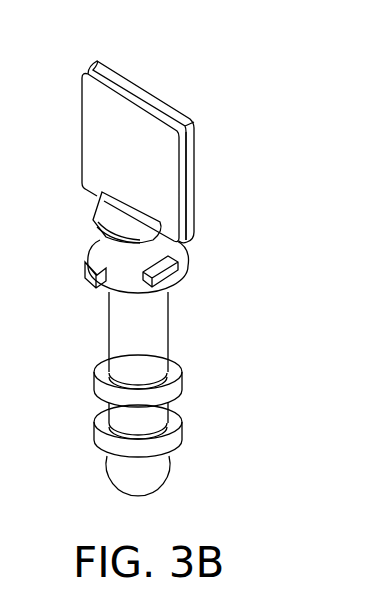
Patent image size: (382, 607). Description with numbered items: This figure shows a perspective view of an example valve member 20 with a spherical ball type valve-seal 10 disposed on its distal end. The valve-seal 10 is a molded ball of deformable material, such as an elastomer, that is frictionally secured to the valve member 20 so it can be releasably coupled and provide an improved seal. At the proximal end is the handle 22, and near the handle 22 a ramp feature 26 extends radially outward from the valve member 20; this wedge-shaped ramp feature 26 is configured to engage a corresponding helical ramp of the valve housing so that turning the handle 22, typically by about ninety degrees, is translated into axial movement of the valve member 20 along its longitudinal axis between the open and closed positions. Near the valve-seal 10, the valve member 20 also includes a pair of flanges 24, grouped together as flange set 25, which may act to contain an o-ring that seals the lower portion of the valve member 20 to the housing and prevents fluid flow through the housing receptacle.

The handle 22 is at (178, 160).
The ramp feature 26 is at (188, 280).
The valve member 20 is at (168, 328).
The flanges 24 is at (183, 387).
The washer assembly 25 is at (126, 406).
The valve-seal 10 is at (166, 483).